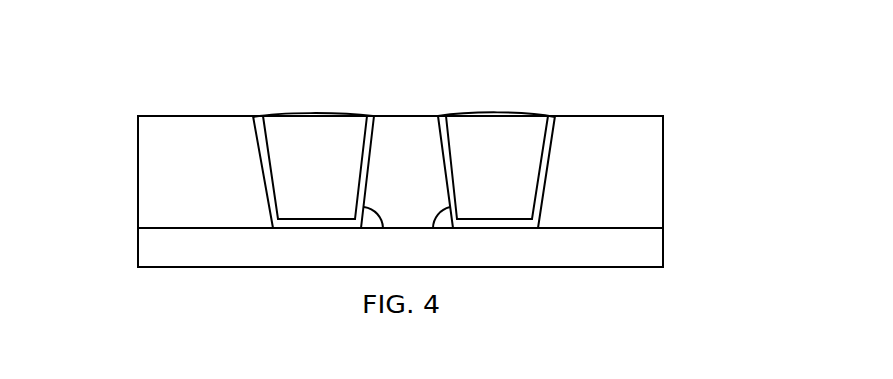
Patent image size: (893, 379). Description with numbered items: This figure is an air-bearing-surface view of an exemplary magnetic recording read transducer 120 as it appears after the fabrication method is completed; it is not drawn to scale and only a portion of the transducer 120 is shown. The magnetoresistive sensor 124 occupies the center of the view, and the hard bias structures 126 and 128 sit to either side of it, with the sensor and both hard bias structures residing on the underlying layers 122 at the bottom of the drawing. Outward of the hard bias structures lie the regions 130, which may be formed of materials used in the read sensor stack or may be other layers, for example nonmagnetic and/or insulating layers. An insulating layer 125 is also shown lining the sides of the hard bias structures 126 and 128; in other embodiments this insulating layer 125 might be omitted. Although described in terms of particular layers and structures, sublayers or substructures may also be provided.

The transducer 120 is at (424, 53).
The underlying layers 122 is at (663, 250).
The magnetoresistive sensor 124 is at (420, 115).
The insulating layer 125 is at (263, 172).
The hard bias structure 126 is at (325, 115).
The hard bias structure 128 is at (470, 115).
The region 130 is at (138, 197).